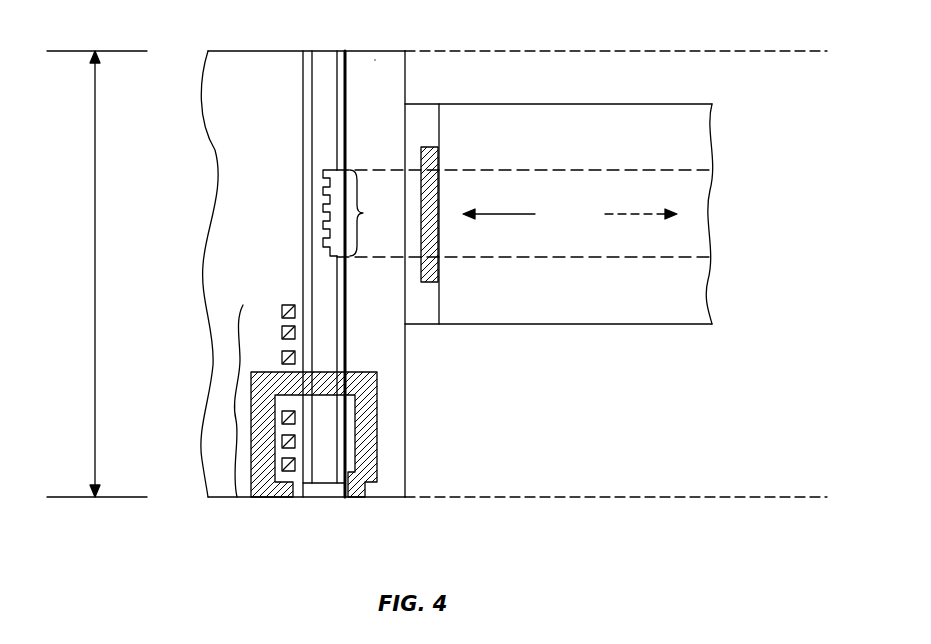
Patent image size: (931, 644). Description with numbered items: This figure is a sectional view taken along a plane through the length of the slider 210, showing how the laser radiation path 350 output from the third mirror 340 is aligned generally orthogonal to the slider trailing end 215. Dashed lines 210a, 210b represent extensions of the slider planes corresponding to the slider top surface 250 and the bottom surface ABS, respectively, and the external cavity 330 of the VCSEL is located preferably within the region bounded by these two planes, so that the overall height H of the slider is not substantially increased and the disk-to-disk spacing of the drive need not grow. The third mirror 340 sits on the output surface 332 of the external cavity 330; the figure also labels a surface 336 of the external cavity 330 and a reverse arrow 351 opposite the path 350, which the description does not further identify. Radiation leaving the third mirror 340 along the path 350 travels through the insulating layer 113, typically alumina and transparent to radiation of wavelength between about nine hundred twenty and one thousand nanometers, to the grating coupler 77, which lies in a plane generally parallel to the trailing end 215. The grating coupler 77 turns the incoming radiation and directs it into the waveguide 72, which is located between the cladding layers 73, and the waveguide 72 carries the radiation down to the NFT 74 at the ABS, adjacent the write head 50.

The slider 210 is at (208, 230).
The slider top surface 250 is at (226, 51).
The insulating layer 113 is at (373, 62).
The waveguide 72 is at (323, 104).
The cladding layers 73 is at (346, 131).
The grating coupler 77 is at (357, 213).
The external cavity 330 is at (439, 110).
The third mirror 340 is at (438, 162).
The output surface 332 is at (439, 302).
The medium bottom surface 336 is at (565, 318).
The laser radiation path 350 is at (500, 214).
The opposite motion direction 351 is at (622, 214).
The slider trailing end 215 is at (405, 414).
The NFT 74 is at (324, 499).
The write head 50 is at (226, 400).
The dashed line 210a is at (741, 51).
The dashed line 210b is at (741, 497).
The overall height of the slider H is at (97, 274).
The air-bearing surface ABS is at (222, 499).